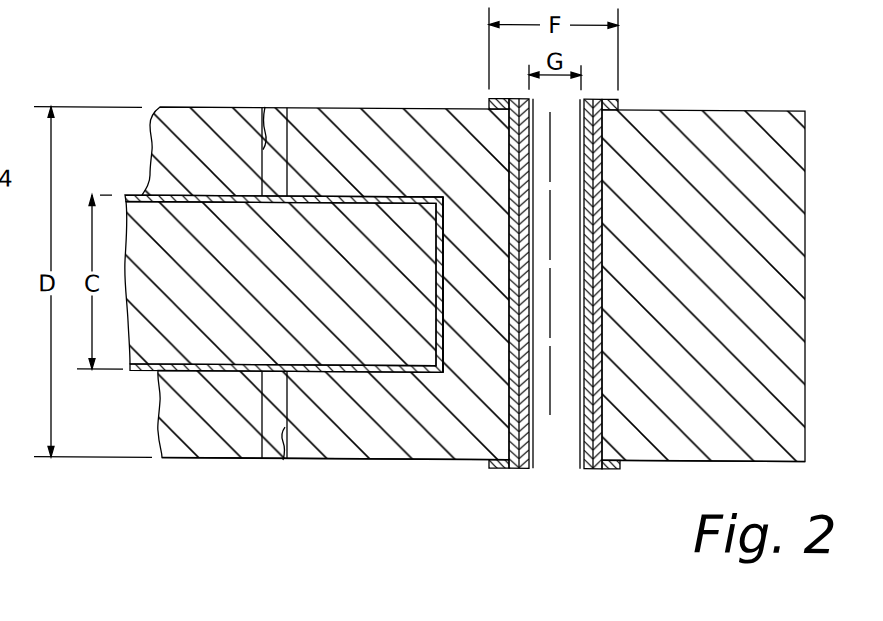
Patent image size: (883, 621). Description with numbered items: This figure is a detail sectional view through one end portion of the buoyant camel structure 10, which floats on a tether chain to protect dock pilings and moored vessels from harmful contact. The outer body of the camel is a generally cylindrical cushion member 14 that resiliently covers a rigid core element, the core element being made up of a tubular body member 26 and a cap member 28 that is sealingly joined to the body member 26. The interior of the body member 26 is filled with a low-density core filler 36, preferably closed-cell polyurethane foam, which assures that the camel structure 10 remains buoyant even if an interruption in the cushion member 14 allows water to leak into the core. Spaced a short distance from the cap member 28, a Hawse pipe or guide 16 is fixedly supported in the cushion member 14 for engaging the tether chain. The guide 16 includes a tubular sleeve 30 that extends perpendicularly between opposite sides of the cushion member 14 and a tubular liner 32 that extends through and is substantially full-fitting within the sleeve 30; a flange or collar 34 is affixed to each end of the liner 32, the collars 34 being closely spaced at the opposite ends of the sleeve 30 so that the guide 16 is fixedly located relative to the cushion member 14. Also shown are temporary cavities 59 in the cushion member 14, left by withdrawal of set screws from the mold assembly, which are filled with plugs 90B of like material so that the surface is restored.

The camel structure 10 is at (563, 528).
The cushion member 14 is at (215, 456).
The guide 16 is at (600, 93).
The tubular body member 26 is at (135, 194).
The cap member 28 is at (444, 209).
The tubular sleeve 30 is at (603, 421).
The tubular liner 32 is at (580, 448).
The collar 34 is at (611, 464).
The core filler 36 is at (297, 292).
The temporary cavity 59 is at (265, 105).
The plug 90B is at (288, 106).